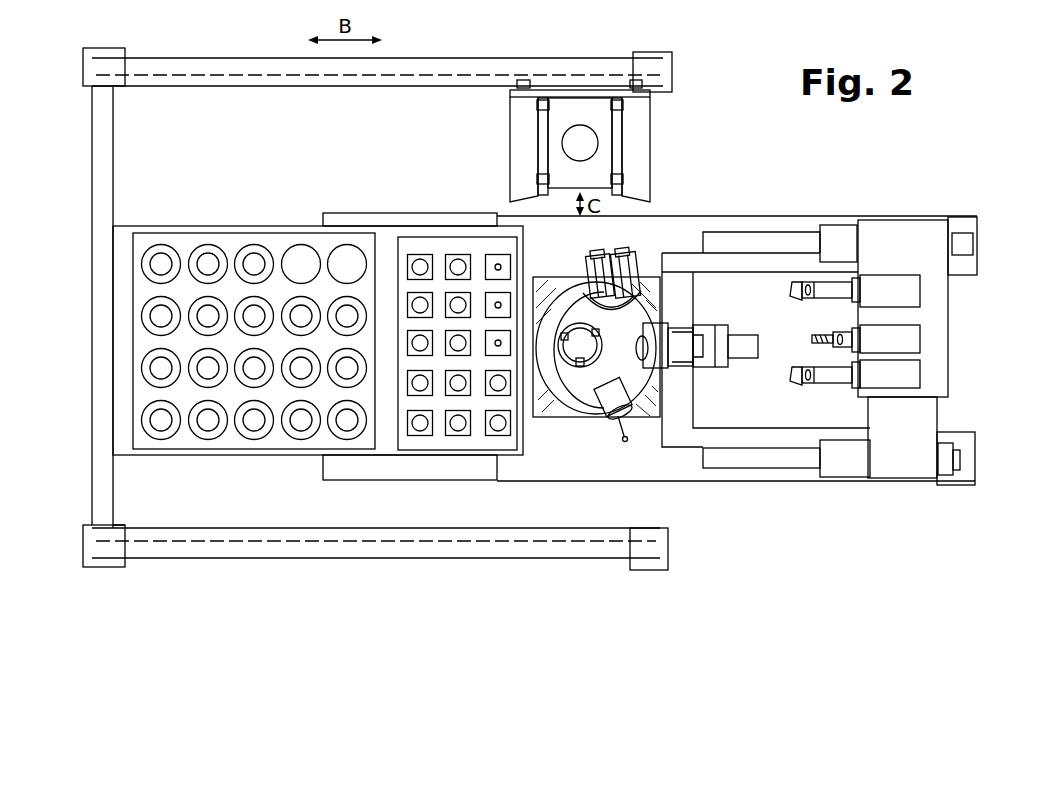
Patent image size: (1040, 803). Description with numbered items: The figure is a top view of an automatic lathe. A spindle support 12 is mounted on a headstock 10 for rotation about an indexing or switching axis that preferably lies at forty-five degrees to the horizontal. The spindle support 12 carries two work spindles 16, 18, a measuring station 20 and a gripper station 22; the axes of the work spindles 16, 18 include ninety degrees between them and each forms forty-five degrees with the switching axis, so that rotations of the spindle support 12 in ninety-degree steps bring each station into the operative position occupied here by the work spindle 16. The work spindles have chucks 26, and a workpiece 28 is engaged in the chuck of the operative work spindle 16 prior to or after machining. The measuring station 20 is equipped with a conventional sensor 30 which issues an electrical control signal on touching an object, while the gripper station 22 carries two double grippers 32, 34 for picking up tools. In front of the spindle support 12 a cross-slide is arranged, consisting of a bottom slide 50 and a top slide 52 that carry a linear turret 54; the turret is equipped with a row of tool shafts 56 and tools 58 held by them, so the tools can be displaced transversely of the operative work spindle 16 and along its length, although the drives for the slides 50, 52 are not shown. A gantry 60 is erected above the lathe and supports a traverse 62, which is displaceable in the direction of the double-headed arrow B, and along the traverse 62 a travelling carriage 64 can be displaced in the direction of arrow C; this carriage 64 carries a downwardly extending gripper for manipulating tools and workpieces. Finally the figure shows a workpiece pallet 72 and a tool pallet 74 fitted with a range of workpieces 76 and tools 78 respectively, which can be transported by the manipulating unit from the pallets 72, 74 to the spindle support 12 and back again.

The headstock 10 is at (703, 290).
The spindle support 12 is at (655, 313).
The work spindle 16 is at (683, 388).
The work spindle 18 is at (567, 390).
The measuring station 20 is at (600, 392).
The gripper station 22 is at (645, 282).
The chuck 26 is at (702, 372).
The workpiece 28 is at (752, 360).
The sensor 30 is at (629, 437).
The double gripper 32 is at (610, 270).
The double gripper 34 is at (625, 256).
The bottom slide 50 is at (895, 465).
The top slide 52 is at (949, 320).
The linear turret 54 is at (894, 250).
The tool shaft 56 is at (833, 379).
The tool 58 is at (814, 336).
The gantry 60 is at (543, 52).
The traverse 62 is at (660, 135).
The travelling carriage 64 is at (553, 157).
The workpiece pallet 72 is at (183, 244).
The tool pallet 74 is at (433, 246).
The workpieces 76 is at (254, 263).
The tools 78 is at (457, 428).